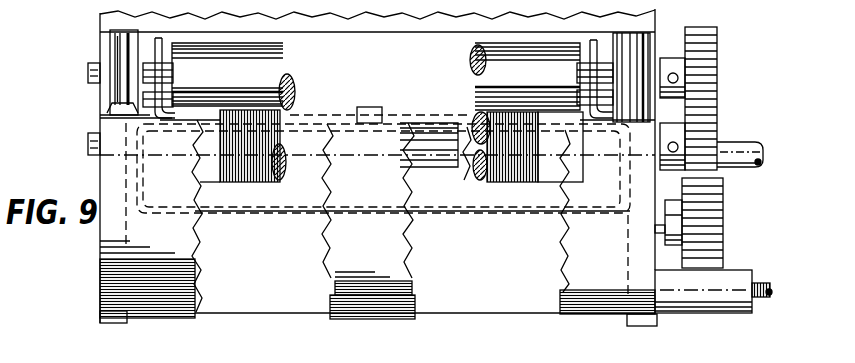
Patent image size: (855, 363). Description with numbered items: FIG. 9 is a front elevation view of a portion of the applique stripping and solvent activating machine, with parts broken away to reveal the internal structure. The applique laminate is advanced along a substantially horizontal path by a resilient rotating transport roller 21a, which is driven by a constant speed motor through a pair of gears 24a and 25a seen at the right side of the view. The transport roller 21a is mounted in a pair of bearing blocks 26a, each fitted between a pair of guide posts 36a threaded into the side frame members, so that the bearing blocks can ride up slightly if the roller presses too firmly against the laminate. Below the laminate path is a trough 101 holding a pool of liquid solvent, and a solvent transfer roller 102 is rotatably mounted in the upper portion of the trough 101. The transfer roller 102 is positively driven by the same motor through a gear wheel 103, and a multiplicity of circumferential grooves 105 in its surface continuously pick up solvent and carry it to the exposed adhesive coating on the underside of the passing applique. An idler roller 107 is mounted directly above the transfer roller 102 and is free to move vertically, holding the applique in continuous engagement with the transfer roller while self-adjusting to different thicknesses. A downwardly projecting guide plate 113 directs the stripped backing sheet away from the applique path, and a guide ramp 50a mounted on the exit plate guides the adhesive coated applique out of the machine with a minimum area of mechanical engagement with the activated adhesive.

The transport roller 21a is at (421, 78).
The bearing blocks 26a is at (100, 43).
The guide posts 36a is at (118, 87).
The idler roller 107 is at (310, 54).
The solvent transfer roller 102 is at (258, 183).
The circumferential grooves 105 is at (510, 176).
The guide ramp 50a is at (372, 113).
The guide plate 113 is at (428, 163).
The trough 101 is at (300, 226).
The gear 25a is at (705, 88).
The gear 24a is at (705, 138).
The gear wheel 103 is at (715, 257).